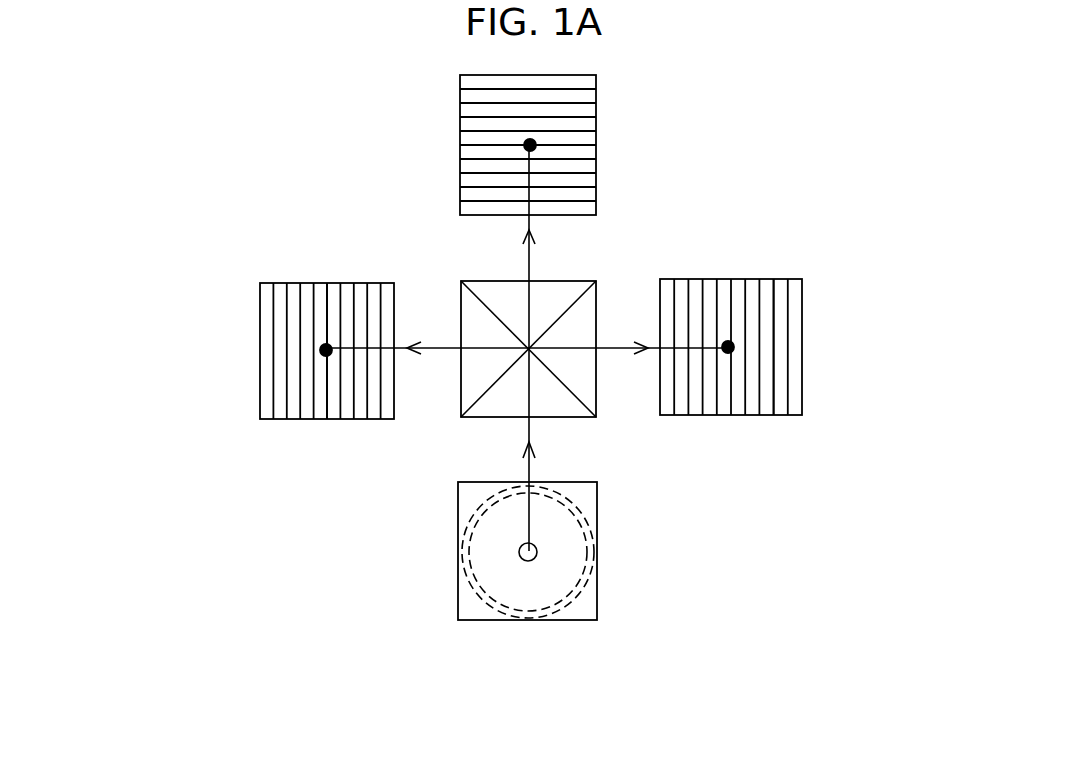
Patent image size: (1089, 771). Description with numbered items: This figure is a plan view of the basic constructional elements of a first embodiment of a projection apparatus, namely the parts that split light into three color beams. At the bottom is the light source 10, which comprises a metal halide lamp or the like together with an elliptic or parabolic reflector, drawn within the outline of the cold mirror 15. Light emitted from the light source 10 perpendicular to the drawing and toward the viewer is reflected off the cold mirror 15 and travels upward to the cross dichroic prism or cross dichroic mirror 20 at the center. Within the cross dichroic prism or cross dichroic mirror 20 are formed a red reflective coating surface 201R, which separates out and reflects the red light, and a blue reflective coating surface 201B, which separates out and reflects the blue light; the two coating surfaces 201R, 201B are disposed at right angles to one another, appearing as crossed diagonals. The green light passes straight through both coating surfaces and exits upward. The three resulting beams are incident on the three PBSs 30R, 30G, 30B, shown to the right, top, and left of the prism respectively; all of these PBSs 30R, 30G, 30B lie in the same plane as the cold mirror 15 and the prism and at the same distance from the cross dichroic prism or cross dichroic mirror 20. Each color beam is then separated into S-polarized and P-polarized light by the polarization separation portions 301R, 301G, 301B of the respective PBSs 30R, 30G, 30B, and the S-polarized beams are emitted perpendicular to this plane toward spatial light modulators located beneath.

The light source 10 is at (577, 593).
The cold mirror 15 is at (597, 512).
The cross dichroic prism or cross dichroic mirror 20 is at (573, 417).
The blue reflective coating surface 201B is at (470, 302).
The red reflective coating surface 201R is at (572, 300).
The PBS 30B is at (258, 370).
The PBS 30G is at (597, 150).
The PBS 30R is at (802, 322).
The polarization separation portion 301B is at (327, 397).
The polarization separation portion 301G is at (577, 103).
The polarization separation portion 301R is at (768, 395).